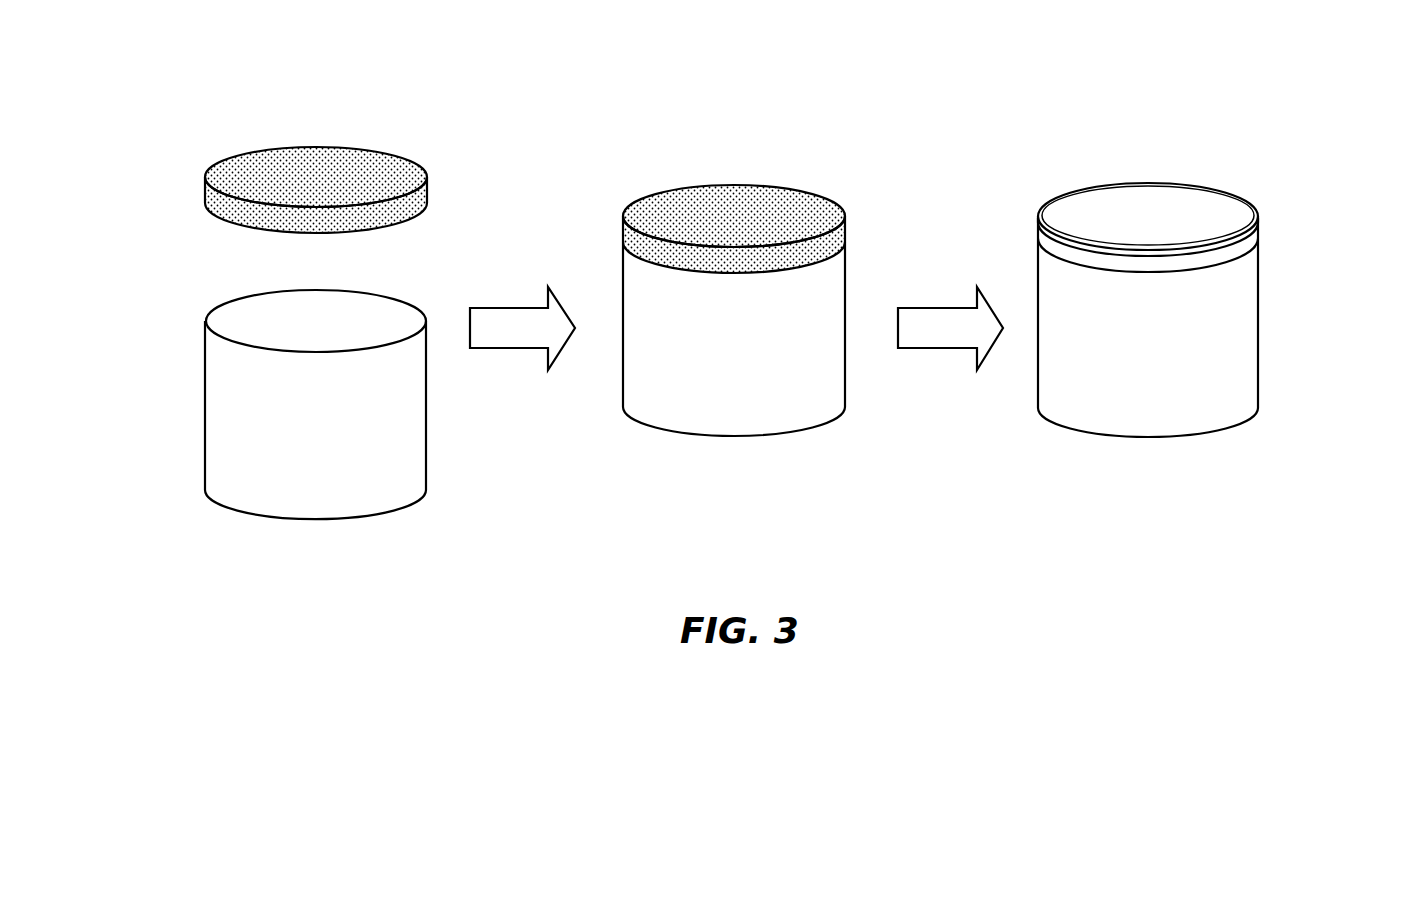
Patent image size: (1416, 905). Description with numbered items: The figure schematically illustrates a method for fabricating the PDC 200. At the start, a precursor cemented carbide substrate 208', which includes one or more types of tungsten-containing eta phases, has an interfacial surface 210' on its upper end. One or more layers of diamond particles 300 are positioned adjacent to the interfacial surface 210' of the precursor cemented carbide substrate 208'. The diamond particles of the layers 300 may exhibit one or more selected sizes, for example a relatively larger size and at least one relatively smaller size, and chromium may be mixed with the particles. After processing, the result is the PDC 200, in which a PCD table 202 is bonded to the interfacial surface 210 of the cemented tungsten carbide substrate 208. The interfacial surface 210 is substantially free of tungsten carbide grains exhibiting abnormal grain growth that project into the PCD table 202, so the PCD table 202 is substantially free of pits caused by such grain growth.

The PDC 200 is at (1224, 289).
The PCD table 202 is at (1243, 243).
The cemented tungsten carbide substrate 208 is at (1148, 365).
The precursor cemented carbide substrate 208' is at (525, 418).
The interfacial surface 210 is at (1198, 271).
The interfacial surface of precursor substrate 210' is at (269, 301).
The layers of diamond particles 300 is at (227, 149).